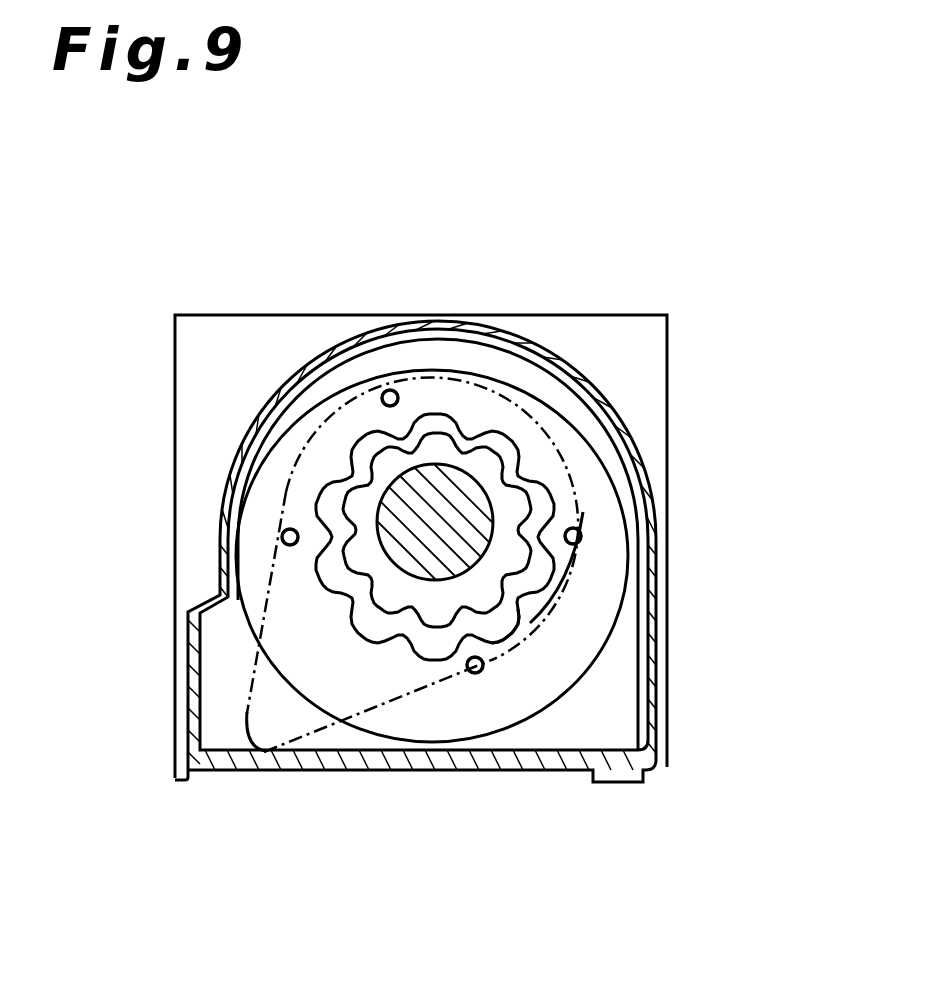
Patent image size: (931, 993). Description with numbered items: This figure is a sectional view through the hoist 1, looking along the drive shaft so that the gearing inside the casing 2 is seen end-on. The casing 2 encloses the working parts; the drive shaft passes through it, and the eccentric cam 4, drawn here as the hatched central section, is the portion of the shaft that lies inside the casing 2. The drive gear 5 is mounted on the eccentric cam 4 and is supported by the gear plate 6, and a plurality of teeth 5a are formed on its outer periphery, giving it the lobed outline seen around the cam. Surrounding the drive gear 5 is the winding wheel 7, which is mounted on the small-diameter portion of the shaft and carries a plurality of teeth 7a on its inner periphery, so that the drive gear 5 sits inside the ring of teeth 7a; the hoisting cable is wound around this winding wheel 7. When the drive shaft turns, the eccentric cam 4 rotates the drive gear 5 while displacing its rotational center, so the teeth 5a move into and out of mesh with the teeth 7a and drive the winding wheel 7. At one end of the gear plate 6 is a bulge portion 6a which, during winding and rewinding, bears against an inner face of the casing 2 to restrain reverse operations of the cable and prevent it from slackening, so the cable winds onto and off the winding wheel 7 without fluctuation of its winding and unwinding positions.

The hoist 1 is at (570, 296).
The casing 2 is at (656, 640).
The eccentric cam 4 is at (458, 497).
The drive gear 5 is at (345, 510).
The teeth 5a is at (520, 580).
The gear plate 6 is at (382, 678).
The bulge portion 6a is at (266, 742).
The winding wheel 7 is at (556, 669).
The teeth 7a is at (532, 500).